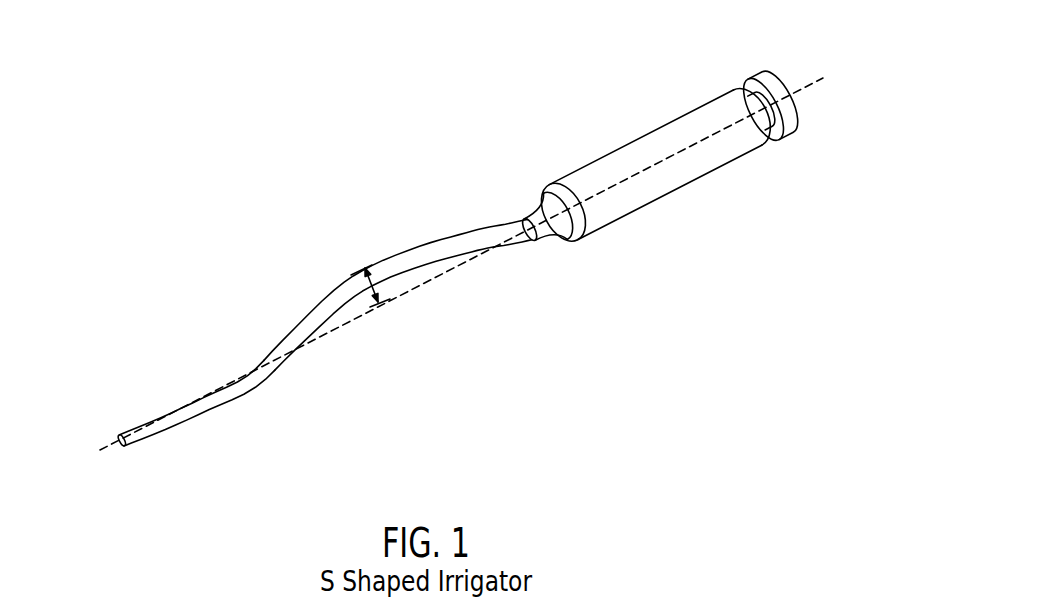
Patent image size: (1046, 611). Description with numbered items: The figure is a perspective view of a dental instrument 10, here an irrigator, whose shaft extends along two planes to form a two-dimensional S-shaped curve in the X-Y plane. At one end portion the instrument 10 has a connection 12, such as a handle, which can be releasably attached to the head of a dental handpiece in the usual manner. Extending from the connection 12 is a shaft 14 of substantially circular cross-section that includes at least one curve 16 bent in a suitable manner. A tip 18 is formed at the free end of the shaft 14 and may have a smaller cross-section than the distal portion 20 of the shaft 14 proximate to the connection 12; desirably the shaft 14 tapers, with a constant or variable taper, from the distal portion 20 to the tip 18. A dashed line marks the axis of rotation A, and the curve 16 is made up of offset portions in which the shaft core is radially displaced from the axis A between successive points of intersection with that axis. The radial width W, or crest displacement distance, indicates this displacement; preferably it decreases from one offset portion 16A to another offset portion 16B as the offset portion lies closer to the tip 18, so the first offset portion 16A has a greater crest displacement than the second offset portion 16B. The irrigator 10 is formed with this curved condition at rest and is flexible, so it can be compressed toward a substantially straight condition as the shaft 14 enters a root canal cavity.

The dental instrument 10 is at (393, 135).
The connection 12 is at (670, 113).
The shaft 14 is at (213, 367).
The curve 16 is at (328, 332).
The first offset portion 16A is at (372, 262).
The second offset portion 16B is at (212, 410).
The tip 18 is at (122, 432).
The distal portion 20 is at (527, 221).
The axis of rotation A is at (472, 255).
The radial width W is at (374, 286).